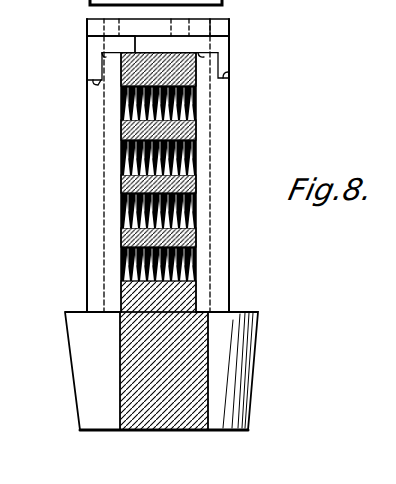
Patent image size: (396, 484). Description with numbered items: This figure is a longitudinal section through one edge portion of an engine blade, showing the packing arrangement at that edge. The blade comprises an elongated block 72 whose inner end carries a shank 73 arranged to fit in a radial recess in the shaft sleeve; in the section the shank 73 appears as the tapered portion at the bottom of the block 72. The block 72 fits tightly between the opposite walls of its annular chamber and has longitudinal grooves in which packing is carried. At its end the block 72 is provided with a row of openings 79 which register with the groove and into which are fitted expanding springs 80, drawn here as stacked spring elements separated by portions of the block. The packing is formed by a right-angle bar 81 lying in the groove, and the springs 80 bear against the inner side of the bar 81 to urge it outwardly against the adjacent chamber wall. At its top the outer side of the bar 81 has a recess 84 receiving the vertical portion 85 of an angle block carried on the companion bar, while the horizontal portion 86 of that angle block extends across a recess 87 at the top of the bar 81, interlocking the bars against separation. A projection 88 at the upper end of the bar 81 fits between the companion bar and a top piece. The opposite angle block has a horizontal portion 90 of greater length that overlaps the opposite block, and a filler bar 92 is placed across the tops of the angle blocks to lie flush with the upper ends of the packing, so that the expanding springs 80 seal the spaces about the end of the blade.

The block 72 is at (183, 292).
The shank 73 is at (251, 333).
The openings 79 is at (173, 180).
The expanding springs 80 is at (193, 148).
The bar 81 is at (112, 210).
The recess 84 is at (93, 82).
The vertical portion 85 is at (90, 68).
The horizontal portion 86 is at (123, 43).
The recess 87 is at (103, 55).
The projection 88 is at (110, 28).
The horizontal portion 90 is at (144, 44).
The filler bar 92 is at (218, 25).